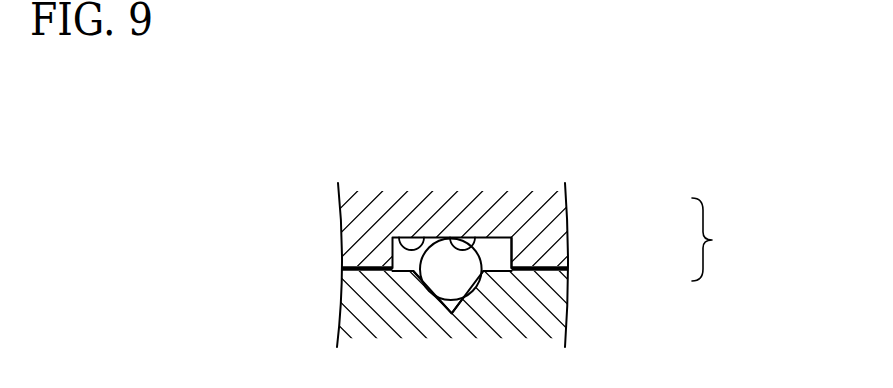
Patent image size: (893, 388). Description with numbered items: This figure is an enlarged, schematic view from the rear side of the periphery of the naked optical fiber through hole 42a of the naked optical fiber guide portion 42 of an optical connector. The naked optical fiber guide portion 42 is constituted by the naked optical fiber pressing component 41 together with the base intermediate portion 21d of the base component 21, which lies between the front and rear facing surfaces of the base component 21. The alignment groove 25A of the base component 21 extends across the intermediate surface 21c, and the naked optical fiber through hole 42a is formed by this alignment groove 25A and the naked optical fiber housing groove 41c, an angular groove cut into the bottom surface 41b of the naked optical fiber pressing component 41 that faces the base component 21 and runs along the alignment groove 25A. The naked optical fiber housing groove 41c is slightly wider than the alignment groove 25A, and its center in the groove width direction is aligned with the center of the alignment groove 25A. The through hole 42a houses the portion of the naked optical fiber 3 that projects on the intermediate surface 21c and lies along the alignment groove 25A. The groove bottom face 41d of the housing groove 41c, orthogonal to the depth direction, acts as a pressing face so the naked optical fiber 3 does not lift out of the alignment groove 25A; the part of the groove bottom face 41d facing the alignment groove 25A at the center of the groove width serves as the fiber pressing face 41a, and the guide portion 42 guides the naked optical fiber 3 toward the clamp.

The naked optical fiber 3 is at (478, 244).
The base component 21 is at (567, 313).
The intermediate surface 21c is at (369, 267).
The base intermediate portion 21d is at (496, 312).
The alignment groove 25A is at (453, 300).
The naked optical fiber pressing component 41 is at (560, 208).
The fiber pressing face 41a is at (476, 240).
The bottom surface 41b is at (525, 270).
The naked optical fiber housing groove 41c is at (500, 250).
The groove bottom face 41d is at (422, 237).
The naked optical fiber guide portion 42 is at (575, 232).
The naked optical fiber through hole 42a is at (727, 239).